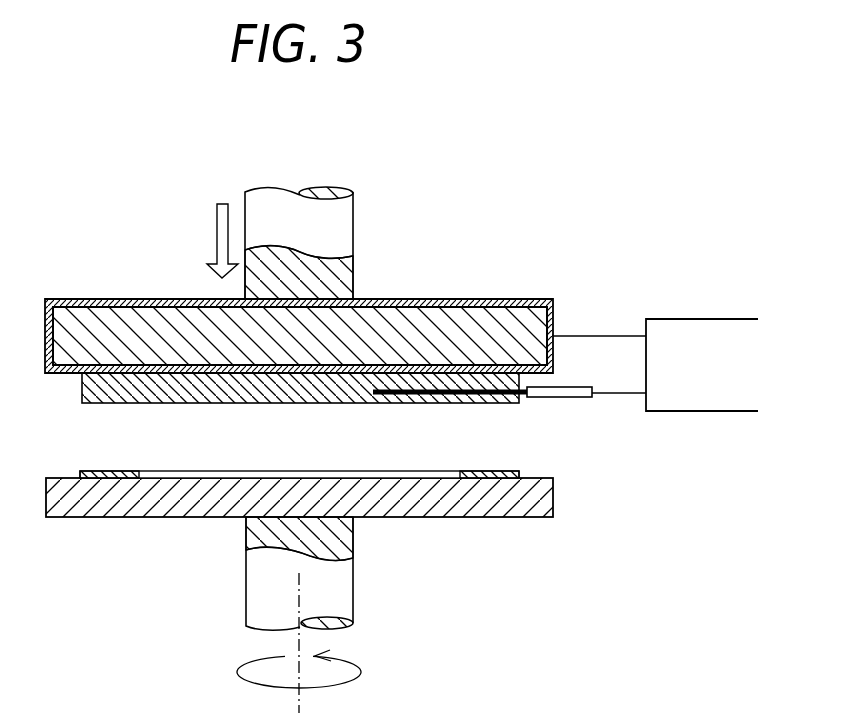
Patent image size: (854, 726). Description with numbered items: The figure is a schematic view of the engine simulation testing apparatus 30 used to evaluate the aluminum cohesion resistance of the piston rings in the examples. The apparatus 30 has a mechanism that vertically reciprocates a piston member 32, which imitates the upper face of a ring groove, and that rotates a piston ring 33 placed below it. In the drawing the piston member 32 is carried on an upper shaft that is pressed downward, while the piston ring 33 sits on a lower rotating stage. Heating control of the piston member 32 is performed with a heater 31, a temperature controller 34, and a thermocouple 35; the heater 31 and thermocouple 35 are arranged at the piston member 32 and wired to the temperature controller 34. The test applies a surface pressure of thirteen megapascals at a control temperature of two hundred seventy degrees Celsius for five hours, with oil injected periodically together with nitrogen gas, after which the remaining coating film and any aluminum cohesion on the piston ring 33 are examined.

The engine simulation testing apparatus 30 is at (497, 228).
The heater 31 is at (119, 332).
The piston member 32 is at (128, 390).
The piston ring 33 is at (491, 474).
The temperature controller 34 is at (700, 333).
The thermocouple 35 is at (445, 397).